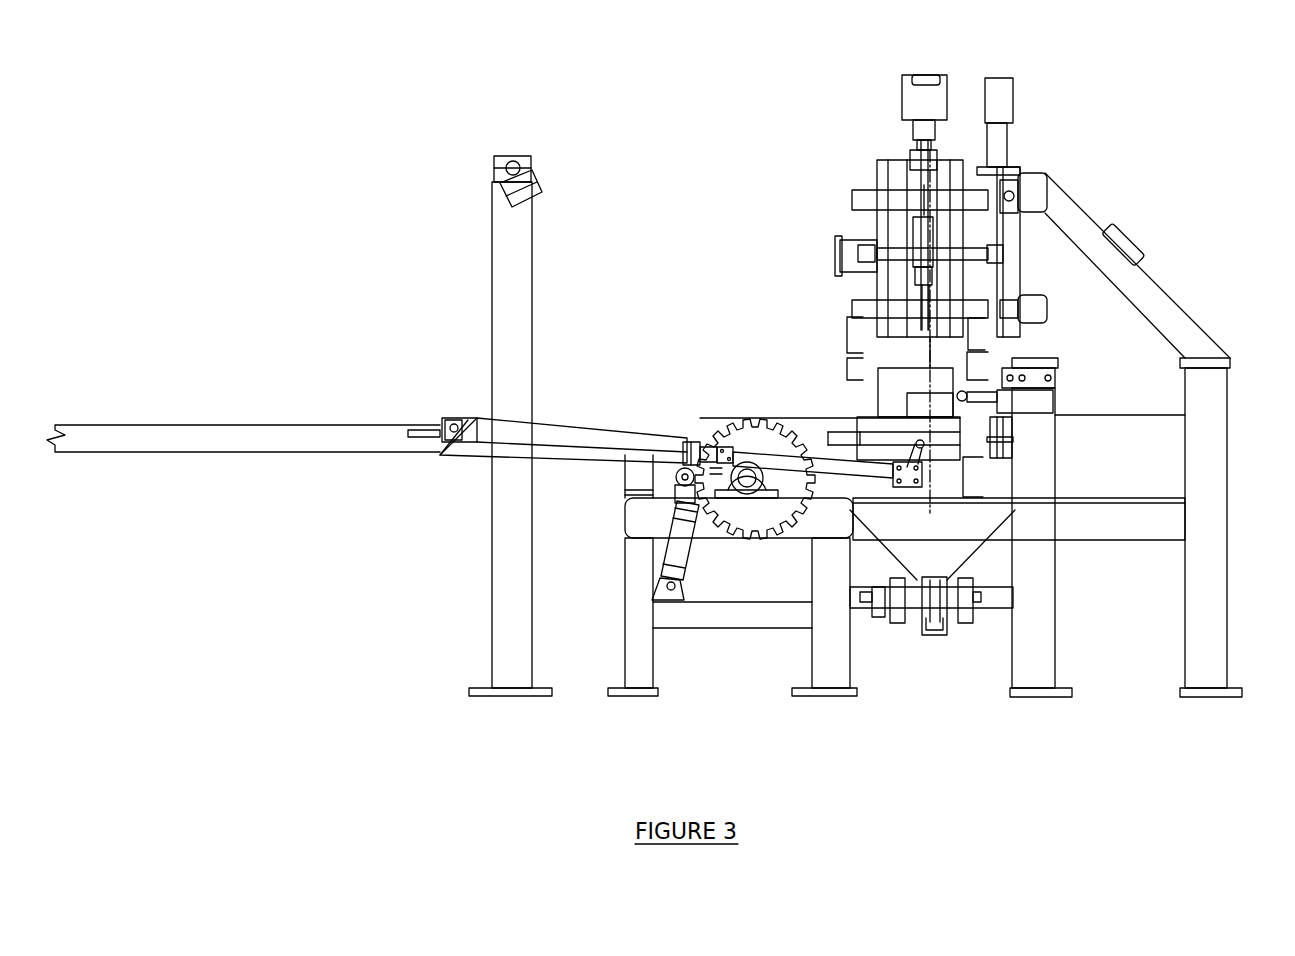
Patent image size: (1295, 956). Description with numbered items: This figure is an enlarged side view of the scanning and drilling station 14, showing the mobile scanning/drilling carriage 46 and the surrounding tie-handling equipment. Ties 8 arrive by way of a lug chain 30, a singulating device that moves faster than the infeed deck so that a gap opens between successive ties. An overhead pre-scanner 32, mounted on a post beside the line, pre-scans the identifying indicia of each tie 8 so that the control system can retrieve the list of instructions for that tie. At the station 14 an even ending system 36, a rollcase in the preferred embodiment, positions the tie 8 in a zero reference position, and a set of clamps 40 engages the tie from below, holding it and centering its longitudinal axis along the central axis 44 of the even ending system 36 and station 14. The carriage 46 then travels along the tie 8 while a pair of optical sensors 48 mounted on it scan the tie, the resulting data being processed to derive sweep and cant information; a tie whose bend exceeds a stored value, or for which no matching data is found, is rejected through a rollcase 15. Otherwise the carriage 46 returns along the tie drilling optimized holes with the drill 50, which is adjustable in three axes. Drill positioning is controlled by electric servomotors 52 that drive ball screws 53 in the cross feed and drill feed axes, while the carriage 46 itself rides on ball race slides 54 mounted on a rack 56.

The tie 8 is at (940, 383).
The scanning and drilling station 14 is at (1163, 135).
The rollcase 15 is at (932, 625).
The lug chain 30 is at (350, 440).
The overhead pre-scanner 32 is at (510, 168).
The even ending system 36 is at (863, 425).
The clamps 40 is at (970, 400).
The central axis 44 is at (930, 352).
The scanning/drilling carriage 46 is at (897, 182).
The optical sensors 48 is at (980, 335).
The drill 50 is at (923, 327).
The electric servomotors 52 is at (925, 80).
The ball screws 53 is at (924, 198).
The ball race slides 54 is at (928, 190).
The rack 56 is at (1045, 188).